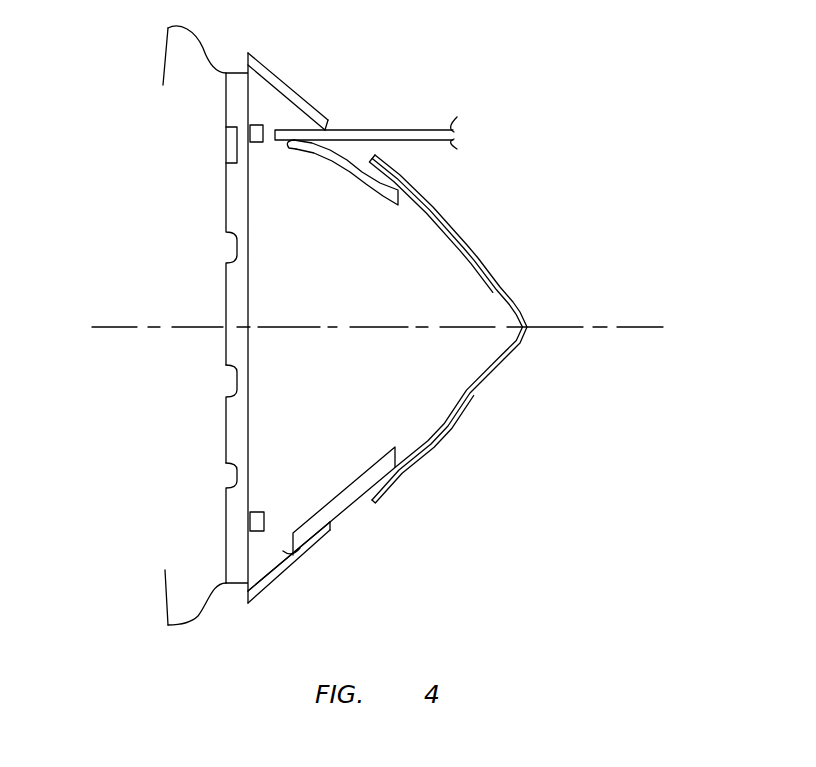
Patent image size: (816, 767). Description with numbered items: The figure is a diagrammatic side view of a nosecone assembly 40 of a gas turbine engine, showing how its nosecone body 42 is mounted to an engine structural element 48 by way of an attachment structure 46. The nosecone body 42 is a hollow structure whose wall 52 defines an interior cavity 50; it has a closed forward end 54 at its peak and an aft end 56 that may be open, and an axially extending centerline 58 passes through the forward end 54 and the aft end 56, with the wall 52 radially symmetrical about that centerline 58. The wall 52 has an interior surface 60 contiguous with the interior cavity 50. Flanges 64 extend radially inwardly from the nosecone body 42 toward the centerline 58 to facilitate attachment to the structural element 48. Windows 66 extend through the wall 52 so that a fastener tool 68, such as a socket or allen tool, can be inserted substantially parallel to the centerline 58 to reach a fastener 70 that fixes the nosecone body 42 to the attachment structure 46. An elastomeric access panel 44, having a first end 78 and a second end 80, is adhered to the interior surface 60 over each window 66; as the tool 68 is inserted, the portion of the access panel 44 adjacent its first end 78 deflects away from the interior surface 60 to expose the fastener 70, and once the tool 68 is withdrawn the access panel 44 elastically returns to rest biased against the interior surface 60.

The nosecone assembly 40 is at (490, 142).
The nosecone body 42 is at (478, 231).
The access panel 44 is at (363, 187).
The attachment structure 46 is at (232, 428).
The structural element 48 is at (184, 596).
The interior cavity 50 is at (318, 372).
The wall 52 is at (484, 268).
The forward end 54 is at (523, 283).
The aft end 56 is at (248, 457).
The axially extending centerline 58 is at (650, 329).
The interior surface 60 is at (252, 102).
The flanges 64 is at (306, 114).
The windows 66 is at (328, 122).
The fastener tool 68 is at (430, 130).
The fastener 70 is at (255, 142).
The first end 78 is at (291, 145).
The second end 80 is at (398, 203).